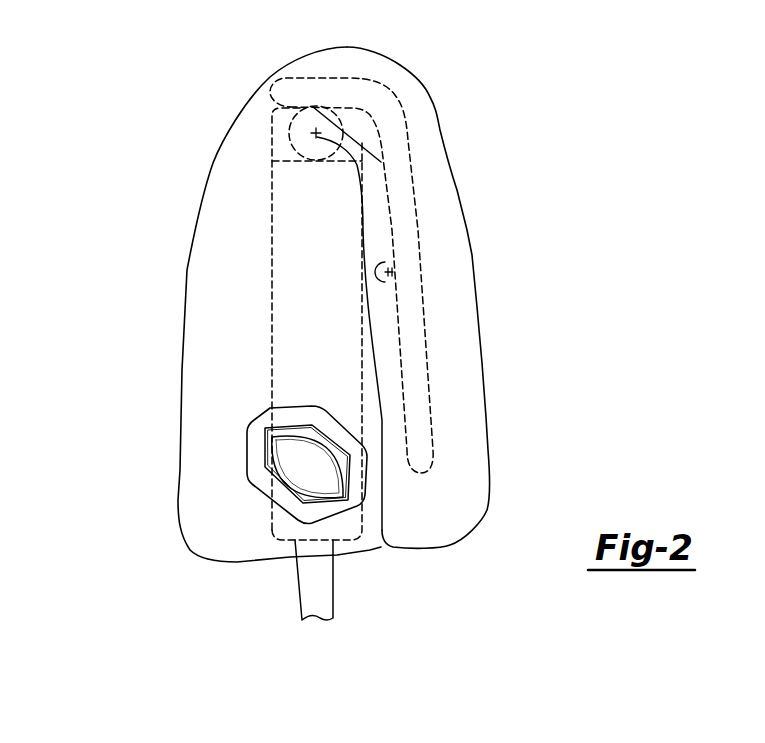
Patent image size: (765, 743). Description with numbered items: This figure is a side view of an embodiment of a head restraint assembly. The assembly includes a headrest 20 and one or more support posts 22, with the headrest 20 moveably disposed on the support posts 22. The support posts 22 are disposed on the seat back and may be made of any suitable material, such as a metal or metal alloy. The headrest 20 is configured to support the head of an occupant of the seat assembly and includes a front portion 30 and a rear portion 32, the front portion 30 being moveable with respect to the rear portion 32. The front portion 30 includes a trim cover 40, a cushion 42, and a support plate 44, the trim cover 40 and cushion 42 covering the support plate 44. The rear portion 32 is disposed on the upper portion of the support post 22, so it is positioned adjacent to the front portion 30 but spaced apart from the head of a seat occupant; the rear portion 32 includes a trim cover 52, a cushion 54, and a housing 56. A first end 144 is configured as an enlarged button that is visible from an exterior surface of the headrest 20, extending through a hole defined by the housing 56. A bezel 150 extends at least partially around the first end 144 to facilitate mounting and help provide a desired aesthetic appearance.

The headrest 20 is at (140, 74).
The support post 22 is at (297, 600).
The front portion 30 is at (484, 252).
The rear portion 32 is at (172, 311).
The trim cover 40 is at (477, 307).
The cushion 42 is at (455, 363).
The support plate 44 is at (435, 412).
The trim cover 52 is at (182, 358).
The cushion 54 is at (210, 402).
The housing 56 is at (272, 518).
The first end 144 is at (327, 503).
The bezel 150 is at (247, 450).